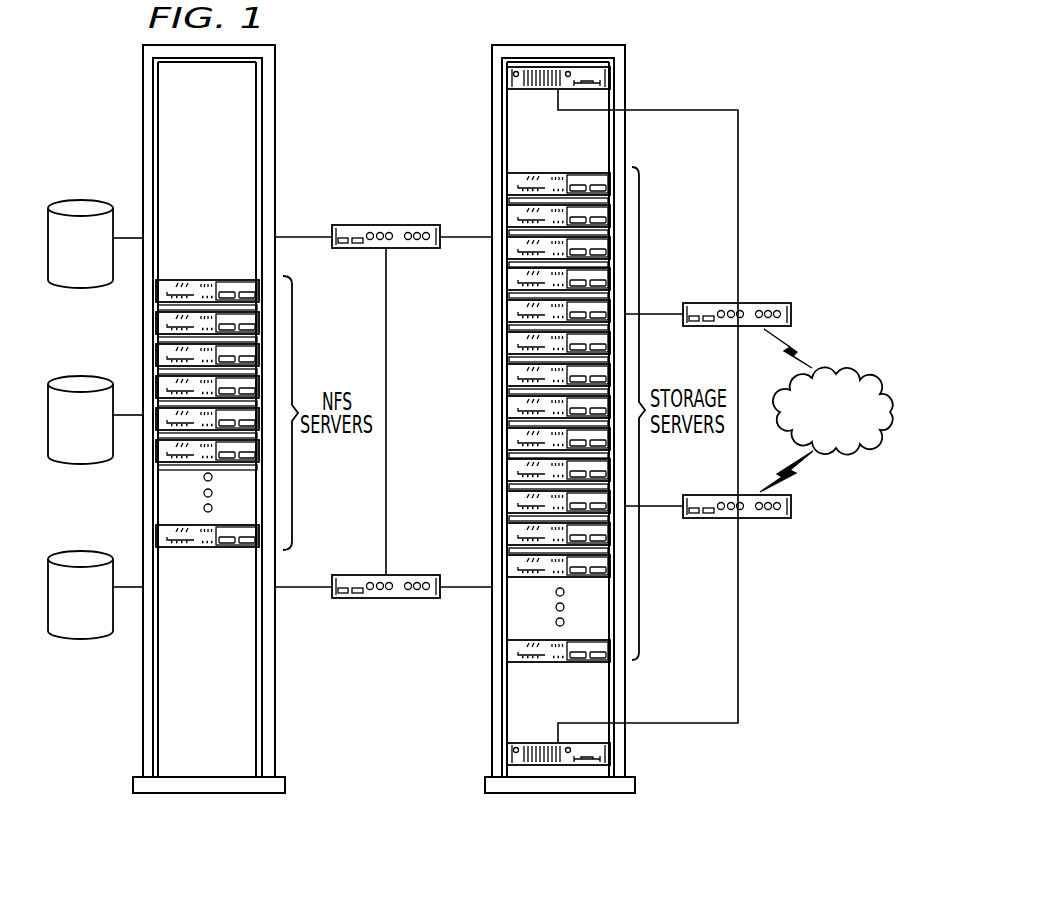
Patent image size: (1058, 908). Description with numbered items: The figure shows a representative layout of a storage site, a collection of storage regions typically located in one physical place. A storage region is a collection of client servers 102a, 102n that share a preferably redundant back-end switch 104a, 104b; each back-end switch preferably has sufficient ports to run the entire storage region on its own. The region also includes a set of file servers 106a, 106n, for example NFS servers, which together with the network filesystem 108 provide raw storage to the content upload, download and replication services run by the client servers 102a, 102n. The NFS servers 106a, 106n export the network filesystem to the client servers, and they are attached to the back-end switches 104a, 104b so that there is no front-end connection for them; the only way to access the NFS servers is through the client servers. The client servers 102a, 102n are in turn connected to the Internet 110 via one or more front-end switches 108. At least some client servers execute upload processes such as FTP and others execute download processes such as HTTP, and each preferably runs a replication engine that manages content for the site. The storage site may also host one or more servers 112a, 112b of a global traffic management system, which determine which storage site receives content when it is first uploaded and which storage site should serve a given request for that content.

The client server 102a is at (560, 172).
The client server 102n is at (560, 663).
The back-end switch 104a is at (385, 224).
The back-end switch 104b is at (385, 599).
The file server 106a is at (206, 279).
The file server 106n is at (206, 548).
The network filesystem / front-end switch 108 is at (70, 203).
The Internet 110 is at (838, 371).
The server of a global traffic management system 112a is at (632, 93).
The server of a global traffic management system 112b is at (632, 741).